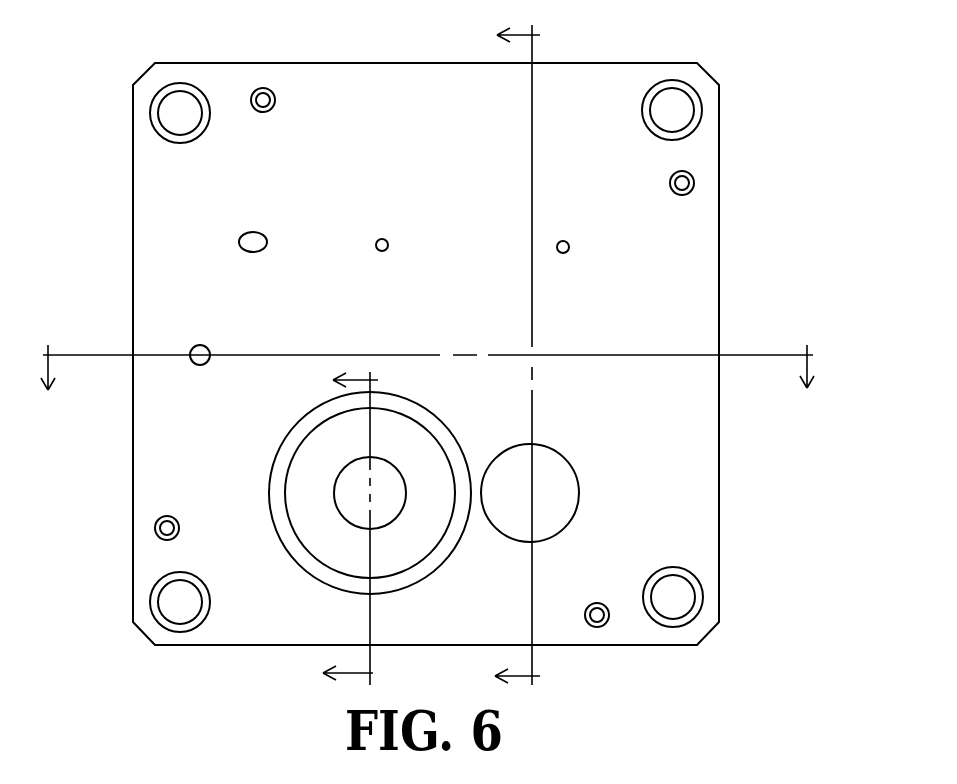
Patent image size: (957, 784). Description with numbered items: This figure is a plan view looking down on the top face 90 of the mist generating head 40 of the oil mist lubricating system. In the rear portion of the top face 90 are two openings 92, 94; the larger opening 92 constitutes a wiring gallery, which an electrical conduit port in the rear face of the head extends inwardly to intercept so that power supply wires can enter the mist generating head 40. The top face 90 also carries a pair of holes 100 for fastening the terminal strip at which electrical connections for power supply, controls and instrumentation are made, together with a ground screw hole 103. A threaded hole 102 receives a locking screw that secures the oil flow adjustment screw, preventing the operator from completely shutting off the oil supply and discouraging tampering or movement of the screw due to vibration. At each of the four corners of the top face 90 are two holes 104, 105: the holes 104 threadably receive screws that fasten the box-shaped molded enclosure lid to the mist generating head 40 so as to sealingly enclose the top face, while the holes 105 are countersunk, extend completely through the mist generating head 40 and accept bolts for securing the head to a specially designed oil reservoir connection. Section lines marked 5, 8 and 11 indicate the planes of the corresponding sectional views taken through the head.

The mist generating head 40 is at (483, 354).
The top face 90 is at (680, 222).
The wiring gallery 92 is at (387, 558).
The opening 94 is at (541, 536).
The holes 100 is at (386, 251).
The threaded hole 102 is at (207, 349).
The ground screw hole 103 is at (253, 240).
The holes 104 is at (258, 90).
The countersunk holes 105 is at (172, 112).
The section line 5- 5 is at (427, 383).
The section line 8- 8 is at (341, 528).
The section line 11- 11 is at (503, 357).